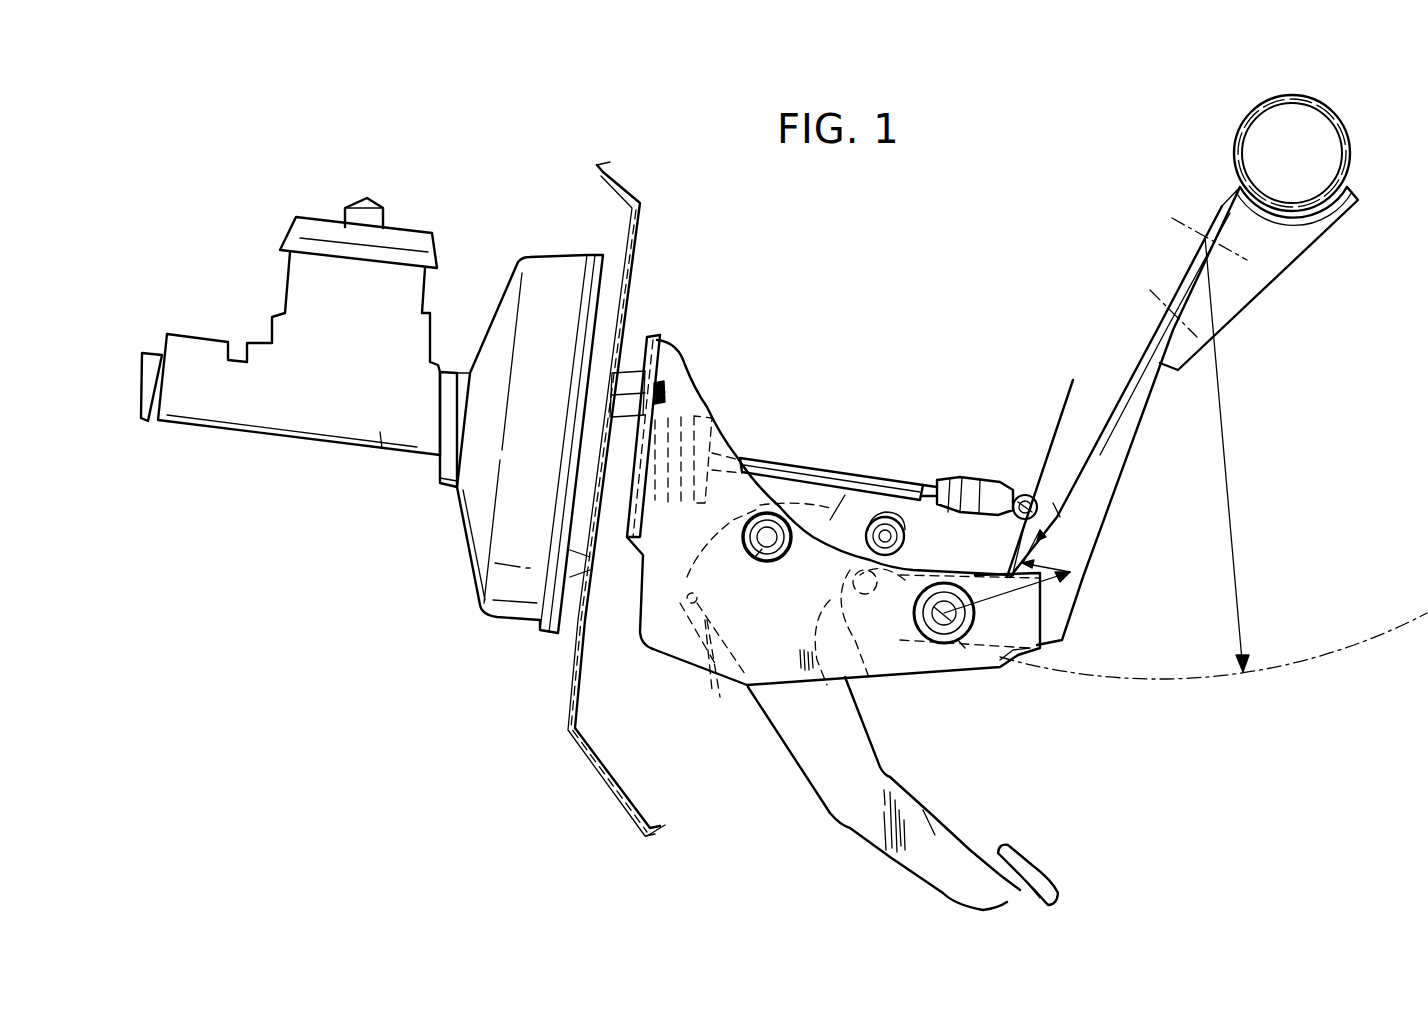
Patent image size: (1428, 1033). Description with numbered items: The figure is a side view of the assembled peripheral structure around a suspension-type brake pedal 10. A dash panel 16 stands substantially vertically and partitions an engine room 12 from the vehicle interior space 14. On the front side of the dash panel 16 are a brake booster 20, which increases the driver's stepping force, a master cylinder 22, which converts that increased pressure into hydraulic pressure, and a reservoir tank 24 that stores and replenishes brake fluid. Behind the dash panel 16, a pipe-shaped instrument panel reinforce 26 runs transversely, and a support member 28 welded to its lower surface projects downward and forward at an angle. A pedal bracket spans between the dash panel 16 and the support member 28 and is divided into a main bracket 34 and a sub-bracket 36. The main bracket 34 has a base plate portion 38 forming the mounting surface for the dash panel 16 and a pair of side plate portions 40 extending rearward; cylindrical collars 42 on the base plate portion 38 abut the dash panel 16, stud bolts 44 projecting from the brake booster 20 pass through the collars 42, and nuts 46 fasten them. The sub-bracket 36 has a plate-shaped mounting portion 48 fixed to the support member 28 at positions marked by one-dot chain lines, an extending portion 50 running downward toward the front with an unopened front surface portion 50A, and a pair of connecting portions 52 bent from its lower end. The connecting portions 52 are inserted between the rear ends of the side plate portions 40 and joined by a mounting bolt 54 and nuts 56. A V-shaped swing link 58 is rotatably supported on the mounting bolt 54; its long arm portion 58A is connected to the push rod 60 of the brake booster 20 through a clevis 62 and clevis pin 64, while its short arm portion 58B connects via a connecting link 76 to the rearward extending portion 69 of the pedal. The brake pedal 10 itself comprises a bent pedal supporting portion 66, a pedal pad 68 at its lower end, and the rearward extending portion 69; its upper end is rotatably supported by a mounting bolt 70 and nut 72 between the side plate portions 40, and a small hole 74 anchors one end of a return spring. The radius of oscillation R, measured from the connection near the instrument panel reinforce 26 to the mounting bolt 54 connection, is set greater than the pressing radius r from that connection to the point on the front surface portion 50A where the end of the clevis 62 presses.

The brake pedal 10 is at (840, 829).
The engine room 12 is at (560, 802).
The vehicle interior space 14 is at (760, 804).
The dash panel 16 is at (633, 805).
The brake booster 20 is at (463, 537).
The master cylinder 22 is at (387, 435).
The reservoir tank 24 is at (287, 288).
The instrument panel reinforce 26 is at (1237, 160).
The support member 28 is at (1300, 243).
The main bracket 34 is at (687, 677).
The sub-bracket 36 is at (1107, 390).
The base plate portion 38 is at (660, 340).
The side plate portions 40 is at (657, 640).
The collar 42 is at (630, 377).
The stud bolts 44 is at (662, 393).
The nuts 46 is at (660, 372).
The mounting portion 48 is at (1170, 297).
The extending portion 50 is at (1114, 496).
The front surface portion 50A is at (1053, 503).
The connecting portions 52 is at (1013, 660).
The mounting bolt 54 is at (947, 630).
The nuts 56 is at (960, 640).
The swing link 58 is at (1040, 560).
The long arm portion 58A is at (1047, 530).
The short arm portion 58B is at (868, 615).
The push rod 60 is at (800, 465).
The clevis 62 is at (957, 478).
The clevis pin 64 is at (1020, 490).
The pedal supporting portion 66 is at (933, 837).
The pedal pad 68 is at (1037, 853).
The rearward extending portion 69 is at (833, 523).
The mounting bolt 70 is at (768, 552).
The nut 72 is at (762, 562).
The small hole 74 is at (708, 690).
The connecting link 76 is at (857, 550).
The pressing radius r is at (1013, 598).
The radius of oscillation R is at (1222, 450).